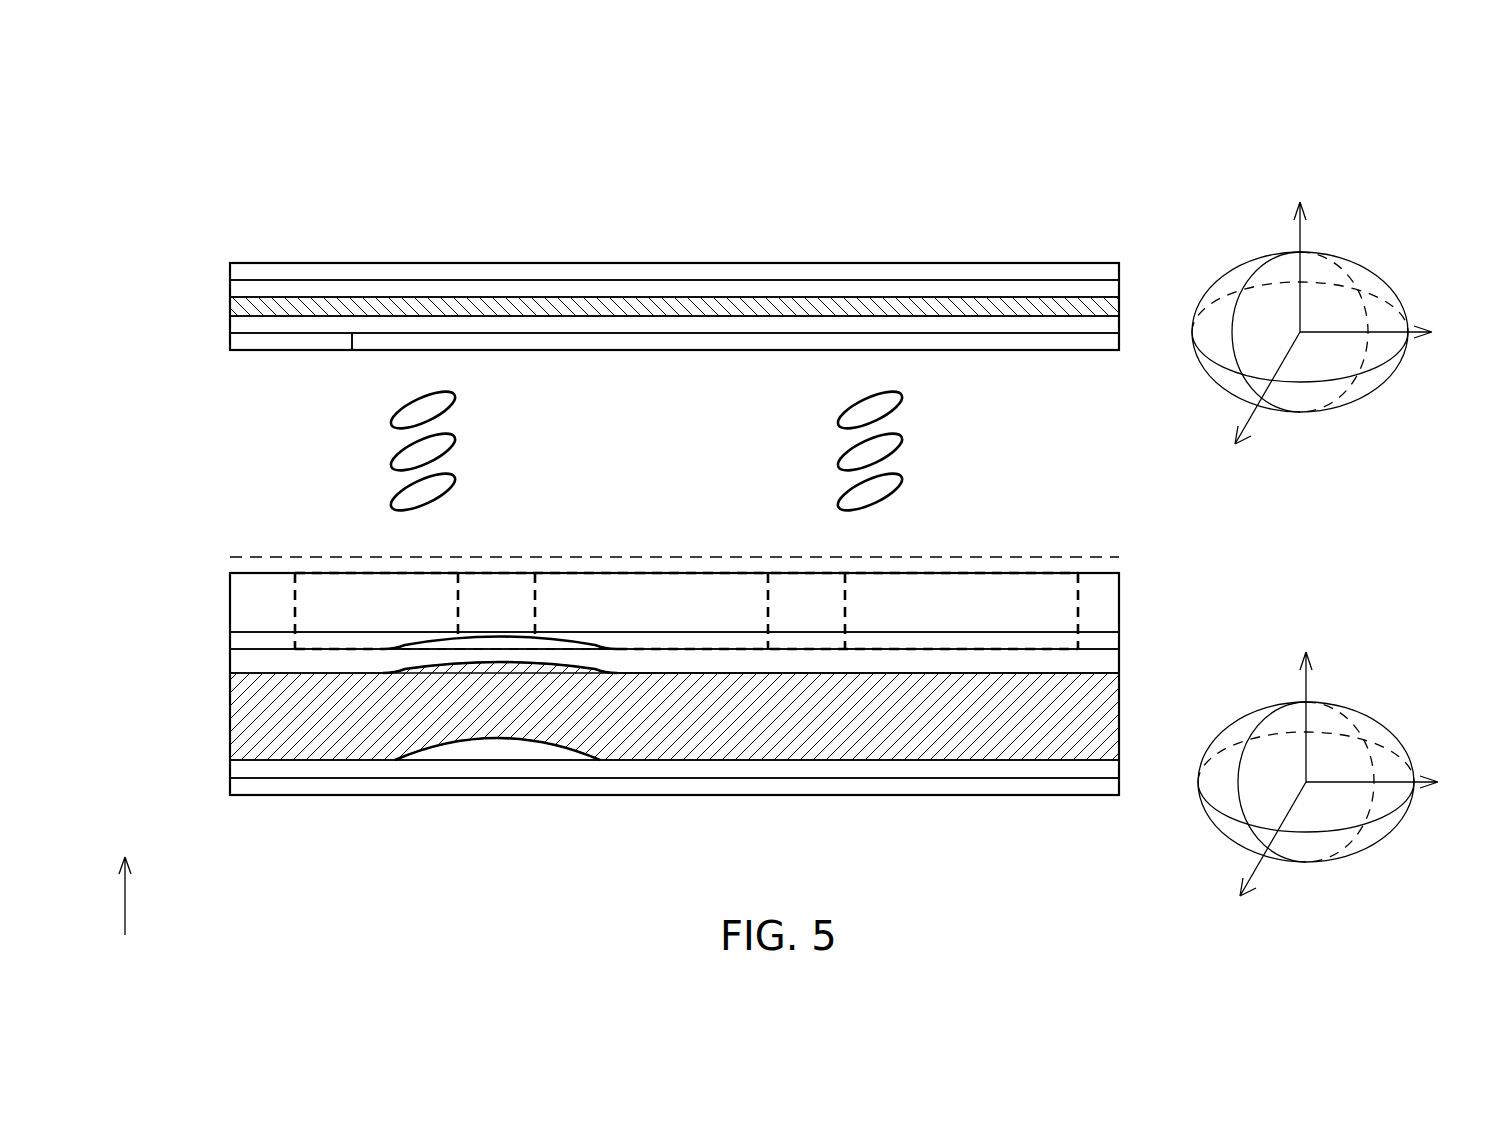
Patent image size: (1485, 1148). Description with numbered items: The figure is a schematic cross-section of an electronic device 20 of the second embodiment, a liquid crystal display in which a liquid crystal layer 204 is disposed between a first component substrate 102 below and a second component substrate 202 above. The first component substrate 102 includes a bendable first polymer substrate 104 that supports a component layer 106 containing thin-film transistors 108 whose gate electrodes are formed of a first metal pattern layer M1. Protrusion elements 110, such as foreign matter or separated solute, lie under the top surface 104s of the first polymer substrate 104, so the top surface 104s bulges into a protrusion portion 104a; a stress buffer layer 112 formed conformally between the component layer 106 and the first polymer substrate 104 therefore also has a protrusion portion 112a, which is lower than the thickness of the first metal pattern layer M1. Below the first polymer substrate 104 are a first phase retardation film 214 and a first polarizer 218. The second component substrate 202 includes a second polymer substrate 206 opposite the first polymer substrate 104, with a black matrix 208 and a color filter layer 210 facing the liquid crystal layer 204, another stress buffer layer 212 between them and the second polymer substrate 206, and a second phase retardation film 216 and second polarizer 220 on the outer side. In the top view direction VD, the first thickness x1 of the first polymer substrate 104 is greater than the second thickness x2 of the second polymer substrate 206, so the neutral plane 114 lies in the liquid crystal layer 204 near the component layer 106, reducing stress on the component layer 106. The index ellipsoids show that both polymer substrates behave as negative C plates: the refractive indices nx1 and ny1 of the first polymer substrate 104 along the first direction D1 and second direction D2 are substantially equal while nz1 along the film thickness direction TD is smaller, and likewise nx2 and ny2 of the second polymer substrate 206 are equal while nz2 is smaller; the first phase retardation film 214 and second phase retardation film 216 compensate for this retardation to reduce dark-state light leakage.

The electronic device 20 is at (1130, 132).
The second component substrate 202 is at (166, 280).
The second polarizer 220 is at (238, 270).
The second phase retardation film 216 is at (238, 288).
The second polymer substrate 206 is at (238, 306).
The stress buffer layer 212 is at (249, 322).
The black matrix 208 is at (249, 341).
The color filter layer 210 is at (405, 345).
The second thickness x2 is at (1137, 263).
The liquid crystal layer 204 is at (1042, 460).
The neutral plane 114 is at (275, 557).
The first component substrate 102 is at (160, 592).
The component layer 106 is at (220, 573).
The thin-film transistors 108 is at (461, 600).
The stress buffer layer 112 is at (245, 662).
The protrusion portion 112a is at (545, 645).
The first polymer substrate 104 is at (248, 731).
The top surface 104s is at (738, 680).
The protrusion portion 104a is at (462, 663).
The protrusion element 110 is at (528, 755).
The first phase retardation film 214 is at (243, 770).
The first polarizer 218 is at (243, 784).
The first metal pattern layer M1 is at (1120, 638).
The first thickness x1 is at (1136, 673).
The top view direction VD is at (124, 882).
The film thickness direction TD is at (1300, 252).
The first direction D1 is at (1382, 334).
The second direction D2 is at (1257, 403).
The refractive index of second polymer substrate in film thickness direction nz2 is at (1302, 252).
The refractive index of second polymer substrate in first direction nx2 is at (1410, 330).
The refractive index of second polymer substrate in second direction ny2 is at (1254, 403).
The refractive index of first polymer substrate in film thickness direction nz1 is at (1308, 702).
The refractive index of first polymer substrate in first direction nx1 is at (1416, 780).
The refractive index of first polymer substrate in second direction ny1 is at (1260, 853).